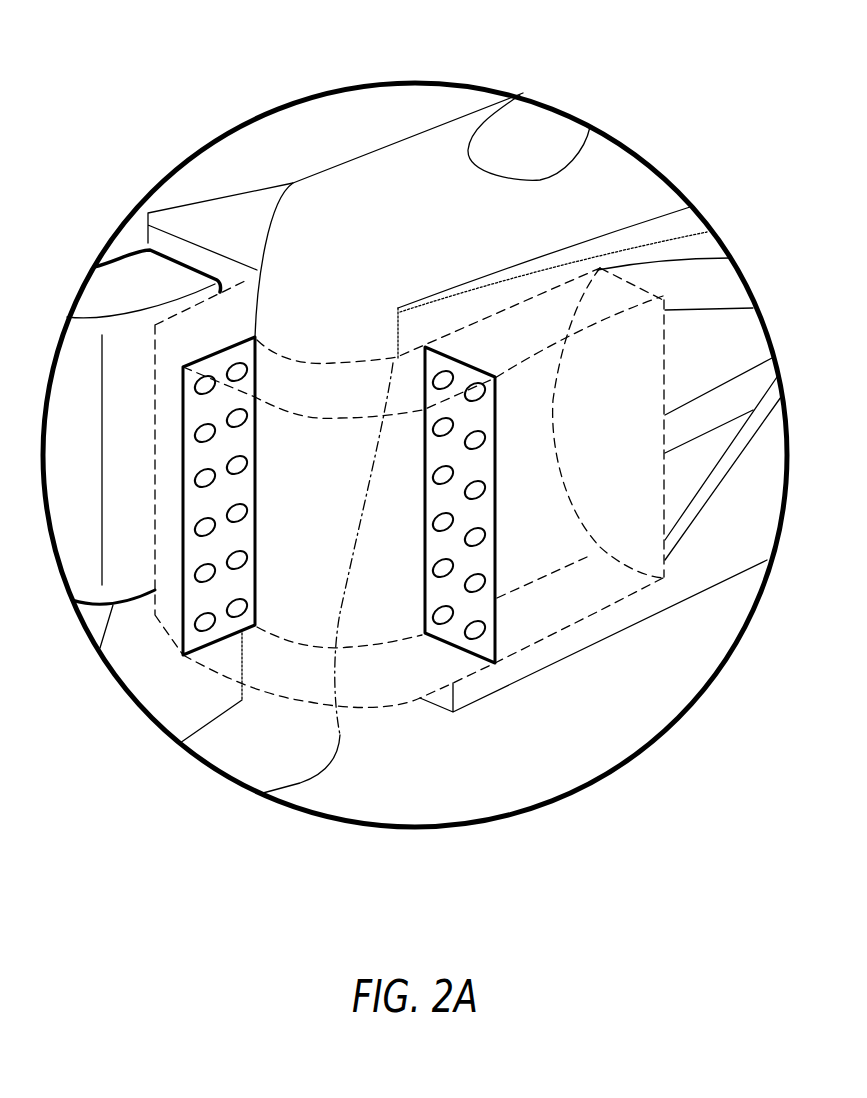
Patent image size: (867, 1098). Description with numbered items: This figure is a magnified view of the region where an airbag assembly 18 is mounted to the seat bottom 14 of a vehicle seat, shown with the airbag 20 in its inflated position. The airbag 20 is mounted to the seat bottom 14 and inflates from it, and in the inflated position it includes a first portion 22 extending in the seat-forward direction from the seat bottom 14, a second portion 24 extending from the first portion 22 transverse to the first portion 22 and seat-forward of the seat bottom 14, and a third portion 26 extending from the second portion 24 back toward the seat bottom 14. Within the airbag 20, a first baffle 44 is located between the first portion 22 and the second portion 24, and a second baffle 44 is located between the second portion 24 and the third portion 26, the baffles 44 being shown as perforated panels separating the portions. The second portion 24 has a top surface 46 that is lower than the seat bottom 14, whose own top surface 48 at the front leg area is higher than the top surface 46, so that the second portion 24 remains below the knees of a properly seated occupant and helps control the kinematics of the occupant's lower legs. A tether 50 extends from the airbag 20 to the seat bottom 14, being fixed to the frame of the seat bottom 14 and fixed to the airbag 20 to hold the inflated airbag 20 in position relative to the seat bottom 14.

The seat bottom 14 is at (217, 227).
The airbag assembly 18 is at (383, 735).
The airbag 20 is at (280, 695).
The first portion 22 is at (597, 613).
The second portion 24 is at (258, 688).
The third portion 26 is at (173, 267).
The baffle 44 is at (180, 613).
The top surface 46 is at (315, 383).
The top surface 48 is at (250, 217).
The tether 50 is at (693, 517).